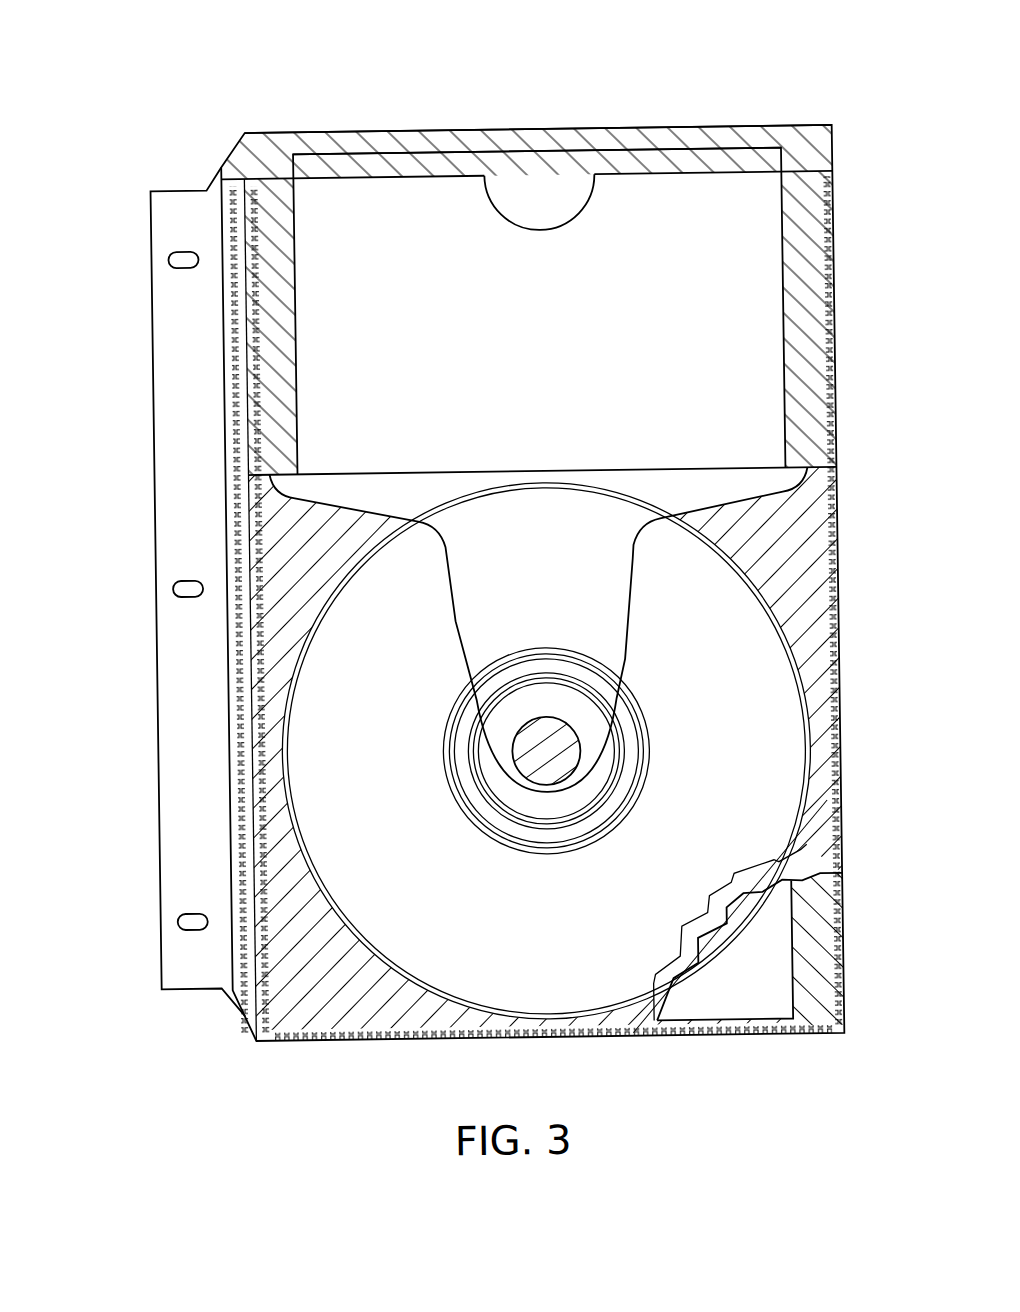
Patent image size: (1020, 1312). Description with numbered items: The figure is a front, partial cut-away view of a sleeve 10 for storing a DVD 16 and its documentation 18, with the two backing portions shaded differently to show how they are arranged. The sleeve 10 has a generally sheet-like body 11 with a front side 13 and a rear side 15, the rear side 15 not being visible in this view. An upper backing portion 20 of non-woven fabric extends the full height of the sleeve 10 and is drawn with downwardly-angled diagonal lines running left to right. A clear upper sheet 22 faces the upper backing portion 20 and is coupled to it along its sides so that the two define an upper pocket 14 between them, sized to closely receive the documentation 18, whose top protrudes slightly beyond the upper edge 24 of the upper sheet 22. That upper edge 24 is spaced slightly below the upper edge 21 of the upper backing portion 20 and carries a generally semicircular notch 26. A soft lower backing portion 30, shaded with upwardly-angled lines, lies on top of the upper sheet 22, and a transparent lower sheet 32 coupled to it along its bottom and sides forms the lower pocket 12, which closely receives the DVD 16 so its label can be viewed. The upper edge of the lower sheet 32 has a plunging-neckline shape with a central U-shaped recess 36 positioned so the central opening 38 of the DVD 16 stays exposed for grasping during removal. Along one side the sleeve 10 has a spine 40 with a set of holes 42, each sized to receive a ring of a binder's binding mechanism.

The sleeve 10 is at (244, 91).
The body 11 is at (305, 147).
The lower pocket 12 is at (821, 532).
The front side 13 is at (833, 219).
The upper pocket 14 is at (806, 168).
The rear side 15 is at (154, 321).
The DVD 16 is at (577, 481).
The documentation 18 is at (384, 158).
The upper backing portion 20 is at (358, 127).
The upper edge of upper backing portion 21 is at (606, 129).
The upper sheet 22 is at (457, 184).
The upper edge of upper sheet 24 is at (661, 172).
The semicircular notch 26 is at (595, 216).
The lower backing portion 30 is at (820, 592).
The lower sheet 32 is at (817, 799).
The U-shaped recess 36 is at (627, 628).
The central opening 38 is at (537, 775).
The spine 40 is at (156, 830).
The holes 42 is at (176, 255).